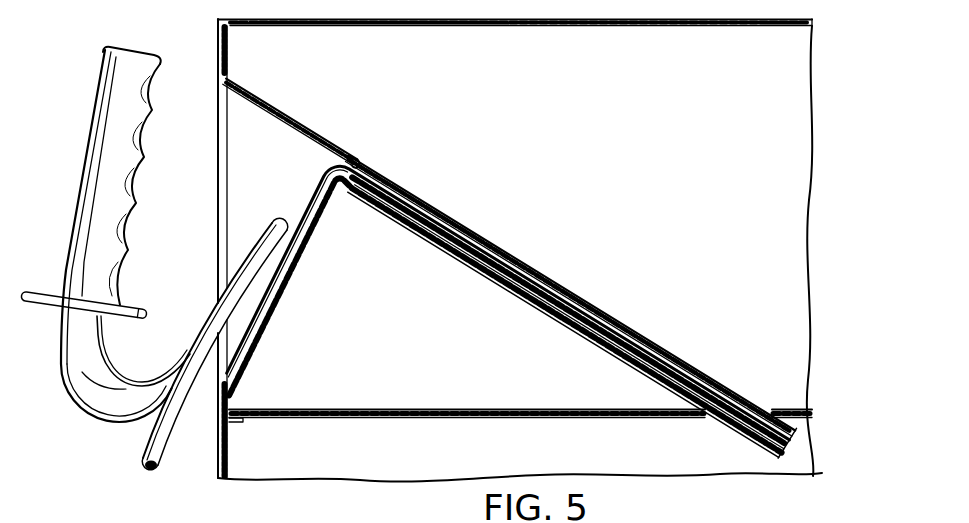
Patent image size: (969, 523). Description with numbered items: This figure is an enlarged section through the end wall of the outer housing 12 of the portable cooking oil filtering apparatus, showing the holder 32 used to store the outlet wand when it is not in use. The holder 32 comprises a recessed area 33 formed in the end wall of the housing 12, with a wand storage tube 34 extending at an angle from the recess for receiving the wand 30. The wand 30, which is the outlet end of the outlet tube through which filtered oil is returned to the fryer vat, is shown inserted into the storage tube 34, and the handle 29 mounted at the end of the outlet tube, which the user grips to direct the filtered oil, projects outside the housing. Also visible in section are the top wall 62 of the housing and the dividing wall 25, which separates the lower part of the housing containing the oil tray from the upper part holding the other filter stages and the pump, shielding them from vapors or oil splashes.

The outer housing 12 is at (218, 448).
The dividing wall 25 is at (480, 408).
The handle 29 is at (91, 191).
The outlet end or wand 30 is at (479, 256).
The holder 32 is at (333, 138).
The recessed area 33 is at (245, 160).
The wand storage tube 34 is at (603, 311).
The top wall 62 is at (498, 28).